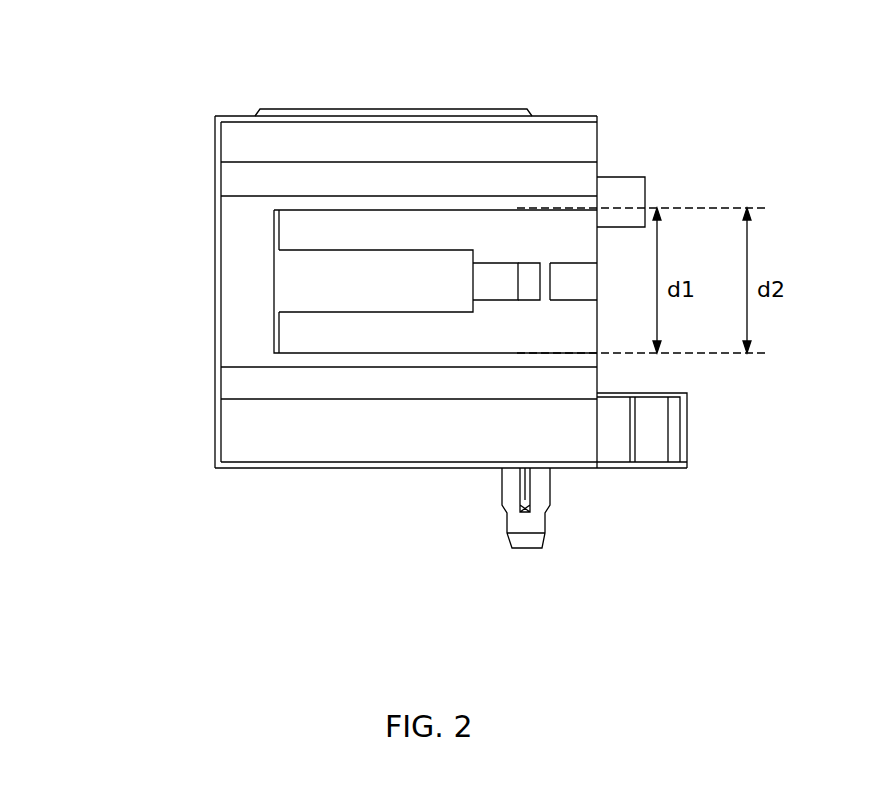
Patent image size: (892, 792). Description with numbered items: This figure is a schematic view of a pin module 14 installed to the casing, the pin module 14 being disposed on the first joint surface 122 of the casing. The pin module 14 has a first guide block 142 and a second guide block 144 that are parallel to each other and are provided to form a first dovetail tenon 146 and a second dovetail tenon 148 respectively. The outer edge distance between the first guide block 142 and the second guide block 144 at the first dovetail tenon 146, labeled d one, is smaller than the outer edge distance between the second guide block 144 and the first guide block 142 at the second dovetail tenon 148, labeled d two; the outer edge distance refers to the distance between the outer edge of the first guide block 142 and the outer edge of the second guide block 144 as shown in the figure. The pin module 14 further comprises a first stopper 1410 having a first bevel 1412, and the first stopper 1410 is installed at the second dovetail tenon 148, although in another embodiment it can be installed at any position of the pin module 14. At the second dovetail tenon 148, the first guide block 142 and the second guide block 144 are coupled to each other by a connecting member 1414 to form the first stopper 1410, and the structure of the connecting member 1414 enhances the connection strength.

The first joint surface 122 is at (393, 130).
The pin module 14 is at (342, 281).
The first guide block 142 is at (288, 233).
The second guide block 144 is at (288, 335).
The first bevel 1412 is at (528, 273).
The connecting member 1414 is at (551, 270).
The first stopper 1410 is at (555, 282).
The first dovetail tenon 146 is at (468, 563).
The second dovetail tenon 148 is at (592, 563).